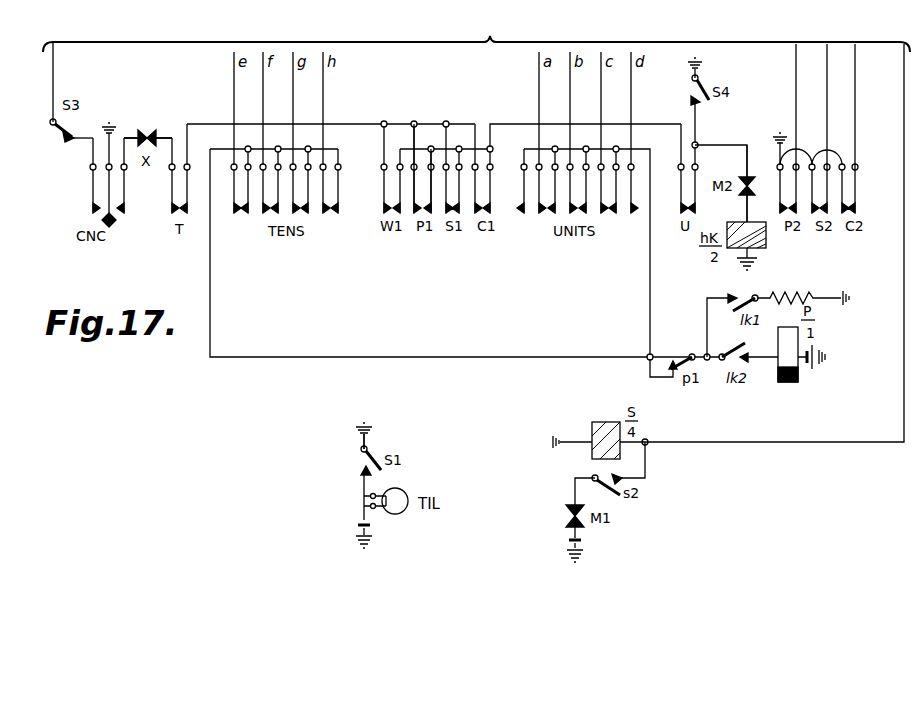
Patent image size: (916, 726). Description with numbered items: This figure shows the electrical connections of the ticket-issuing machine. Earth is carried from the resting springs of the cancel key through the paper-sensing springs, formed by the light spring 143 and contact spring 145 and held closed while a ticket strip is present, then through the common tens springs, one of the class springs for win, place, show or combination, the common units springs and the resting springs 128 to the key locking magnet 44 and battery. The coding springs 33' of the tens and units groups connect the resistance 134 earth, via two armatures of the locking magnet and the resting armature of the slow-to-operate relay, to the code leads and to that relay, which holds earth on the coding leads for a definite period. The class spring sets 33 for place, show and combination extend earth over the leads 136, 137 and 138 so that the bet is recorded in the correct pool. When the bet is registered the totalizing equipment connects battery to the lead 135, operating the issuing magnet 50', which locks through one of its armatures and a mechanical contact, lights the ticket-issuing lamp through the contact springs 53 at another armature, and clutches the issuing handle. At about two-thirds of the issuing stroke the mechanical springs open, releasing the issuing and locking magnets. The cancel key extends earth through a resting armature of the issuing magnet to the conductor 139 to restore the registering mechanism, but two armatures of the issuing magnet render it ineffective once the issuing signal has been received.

The conductor 139 is at (53, 63).
The light spring 143 is at (150, 121).
The contact spring 145 is at (150, 126).
The coding springs 33' is at (431, 189).
The class spring sets 33 is at (811, 158).
The lead 136 is at (795, 63).
The lead 137 is at (826, 63).
The lead 138 is at (854, 63).
The lead 135 is at (904, 63).
The resting springs 128 is at (752, 196).
The key locking magnet 44 is at (766, 240).
The resistance 134 is at (803, 287).
The electrical contact springs 53 is at (364, 463).
The issuing magnet 50' is at (601, 427).